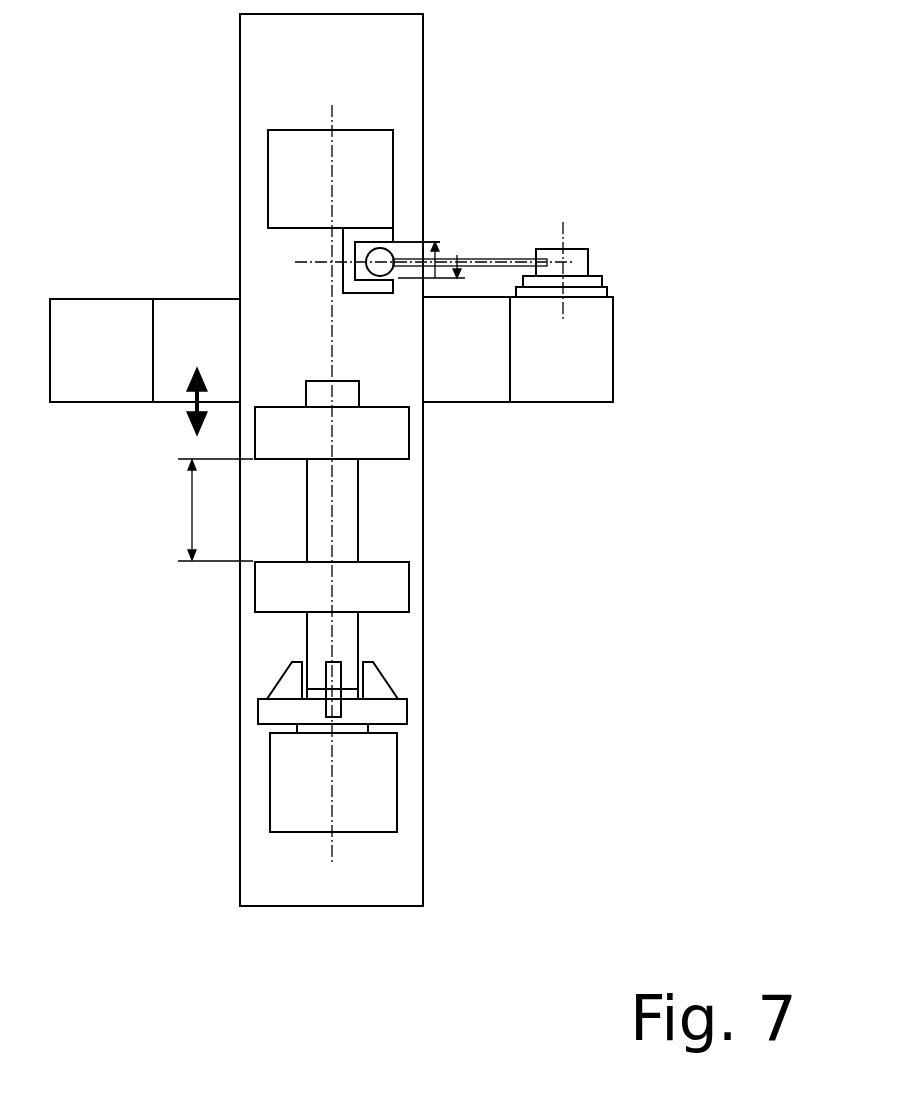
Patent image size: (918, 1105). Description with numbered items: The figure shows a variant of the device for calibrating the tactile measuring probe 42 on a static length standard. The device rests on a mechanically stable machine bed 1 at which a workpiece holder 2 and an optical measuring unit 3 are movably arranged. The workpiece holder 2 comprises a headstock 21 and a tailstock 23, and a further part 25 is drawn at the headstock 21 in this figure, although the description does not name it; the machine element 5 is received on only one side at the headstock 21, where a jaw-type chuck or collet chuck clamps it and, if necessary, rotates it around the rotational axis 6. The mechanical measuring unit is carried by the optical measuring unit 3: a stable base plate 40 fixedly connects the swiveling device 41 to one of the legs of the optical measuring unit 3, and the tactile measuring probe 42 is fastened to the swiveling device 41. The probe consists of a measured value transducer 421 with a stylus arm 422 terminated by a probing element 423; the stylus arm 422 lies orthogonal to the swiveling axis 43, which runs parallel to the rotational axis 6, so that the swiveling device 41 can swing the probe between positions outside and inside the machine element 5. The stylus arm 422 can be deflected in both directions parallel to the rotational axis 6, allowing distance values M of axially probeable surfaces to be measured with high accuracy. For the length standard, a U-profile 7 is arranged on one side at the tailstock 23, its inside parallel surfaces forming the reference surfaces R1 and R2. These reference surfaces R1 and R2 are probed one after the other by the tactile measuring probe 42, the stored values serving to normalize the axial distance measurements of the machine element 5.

The machine bed 1 is at (382, 103).
The workpiece holder 2 is at (88, 725).
The optical measuring unit 3 is at (592, 380).
The machine element 5 is at (383, 588).
The rotational axis 6 is at (332, 110).
The U-profile 7 is at (382, 253).
The headstock 21 is at (290, 780).
The tailstock 23 is at (293, 173).
The holder plate 25 is at (277, 712).
The base plate 40 is at (608, 294).
The swiveling device 41 is at (597, 282).
The tactile measuring probe 42 is at (729, 172).
The swiveling axis 43 is at (563, 222).
The measured value transducer 421 is at (583, 268).
The stylus arm 422 is at (490, 258).
The probing element 423 is at (400, 241).
The distance values M is at (209, 510).
The reference surface R1 is at (457, 255).
The reference surface R2 is at (437, 265).